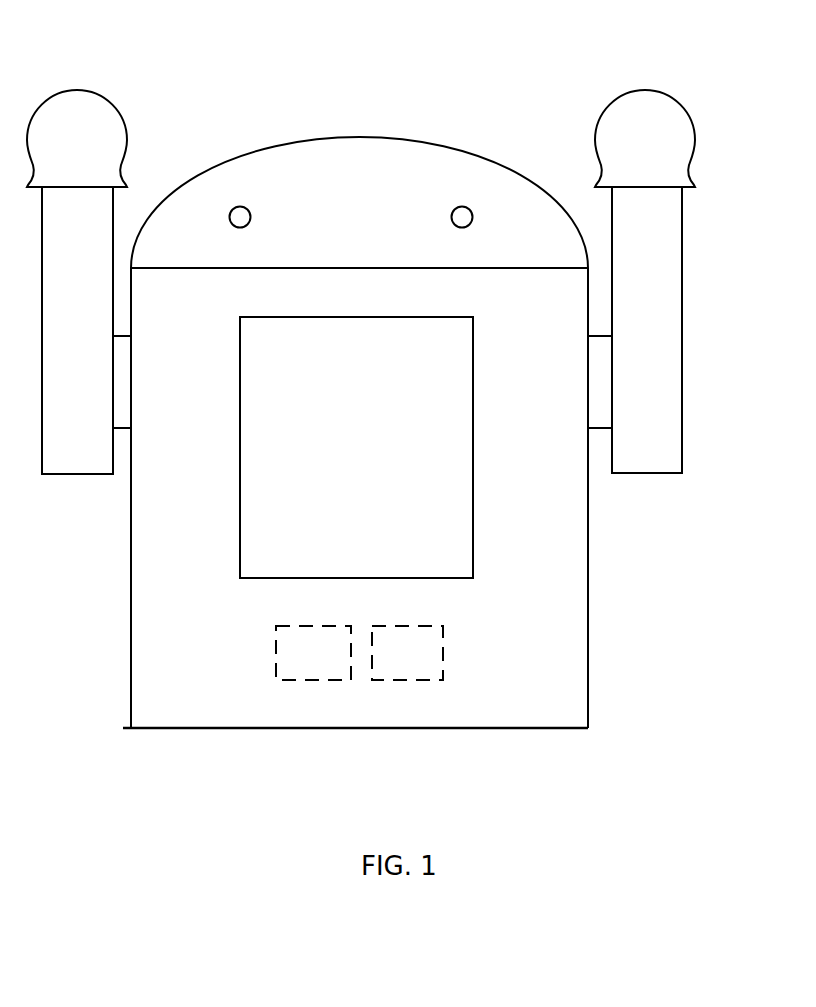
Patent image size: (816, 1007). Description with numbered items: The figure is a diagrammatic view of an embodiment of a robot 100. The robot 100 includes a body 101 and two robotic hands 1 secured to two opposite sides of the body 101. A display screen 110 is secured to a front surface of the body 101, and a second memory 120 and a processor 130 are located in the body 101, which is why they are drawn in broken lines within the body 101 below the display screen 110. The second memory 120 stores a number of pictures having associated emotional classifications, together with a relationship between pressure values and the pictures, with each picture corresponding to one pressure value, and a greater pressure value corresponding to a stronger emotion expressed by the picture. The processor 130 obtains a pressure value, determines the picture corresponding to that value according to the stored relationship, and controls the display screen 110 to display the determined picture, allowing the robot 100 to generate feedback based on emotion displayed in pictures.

The robot 100 is at (220, 64).
The robotic hands 1 is at (647, 176).
The body 101 is at (563, 526).
The display screen 110 is at (473, 553).
The second memory 120 is at (300, 653).
The processor 130 is at (418, 653).